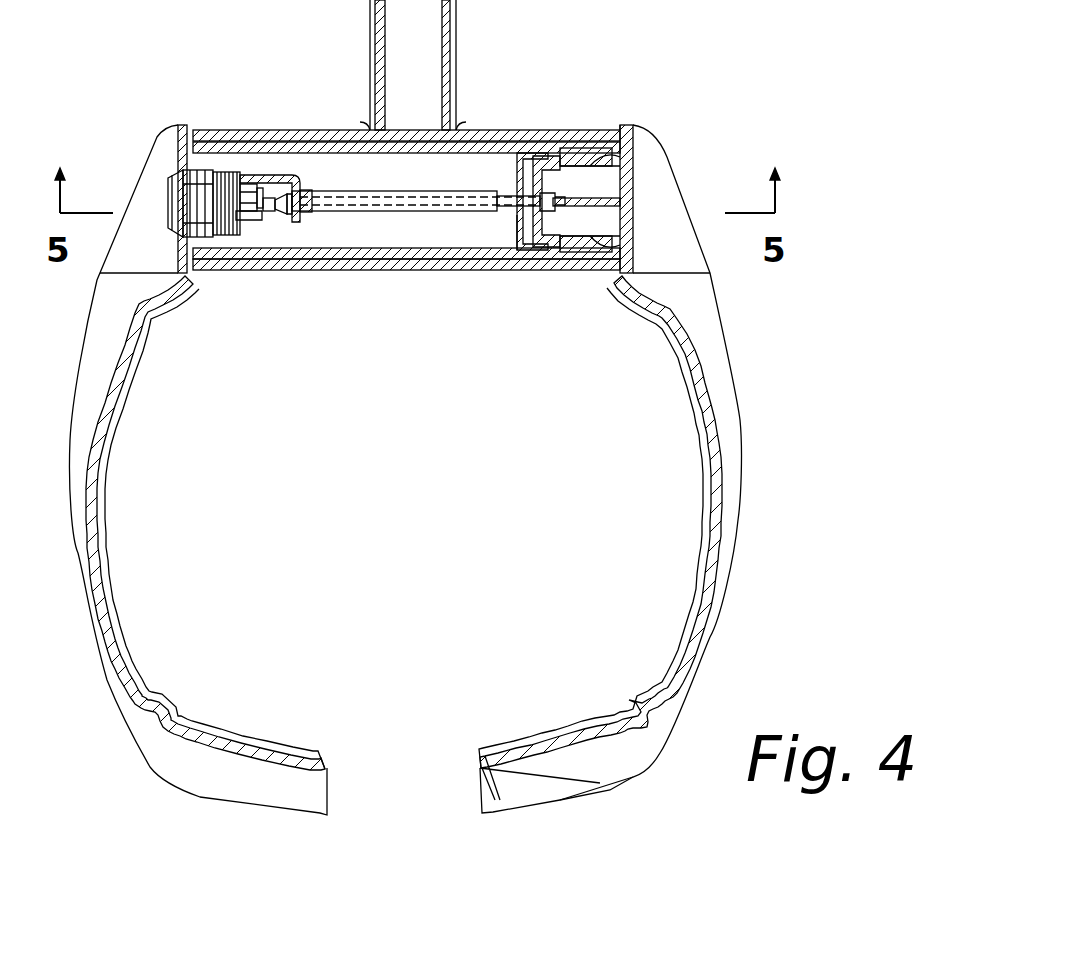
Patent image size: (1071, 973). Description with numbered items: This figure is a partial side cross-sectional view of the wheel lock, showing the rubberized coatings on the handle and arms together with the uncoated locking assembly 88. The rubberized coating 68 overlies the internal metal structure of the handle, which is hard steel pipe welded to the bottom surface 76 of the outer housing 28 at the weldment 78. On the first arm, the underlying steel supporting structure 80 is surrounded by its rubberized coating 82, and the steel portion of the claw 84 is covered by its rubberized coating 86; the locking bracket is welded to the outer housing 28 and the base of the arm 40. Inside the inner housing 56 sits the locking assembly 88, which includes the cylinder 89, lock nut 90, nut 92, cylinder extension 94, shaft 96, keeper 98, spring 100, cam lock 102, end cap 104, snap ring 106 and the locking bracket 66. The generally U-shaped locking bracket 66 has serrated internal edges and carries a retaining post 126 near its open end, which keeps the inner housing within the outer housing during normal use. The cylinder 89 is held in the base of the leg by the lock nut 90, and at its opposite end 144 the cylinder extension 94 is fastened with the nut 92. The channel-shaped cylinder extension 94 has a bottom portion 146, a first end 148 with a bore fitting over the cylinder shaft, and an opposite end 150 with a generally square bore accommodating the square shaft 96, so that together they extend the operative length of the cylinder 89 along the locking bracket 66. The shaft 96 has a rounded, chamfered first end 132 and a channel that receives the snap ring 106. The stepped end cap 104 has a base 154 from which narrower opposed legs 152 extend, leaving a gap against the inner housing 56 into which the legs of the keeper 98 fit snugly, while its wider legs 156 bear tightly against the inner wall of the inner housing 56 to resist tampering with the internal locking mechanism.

The outer housing 28 is at (601, 110).
The arm 40 is at (752, 428).
The inner housing 56 is at (288, 216).
The locking bracket 66 is at (468, 195).
The rubberized coating 68 is at (455, 4).
The bottom surface 76 is at (327, 140).
The weldment 78 is at (370, 128).
The steel supporting structure 80 is at (692, 370).
The rubberized coating 82 is at (720, 388).
The steel portion of the claw 84 is at (513, 770).
The rubberized coating 86 is at (619, 783).
The locking assembly 88 is at (426, 242).
The cylinder 89 is at (197, 236).
The lock nut 90 is at (203, 188).
The nut 92 is at (243, 195).
The cylinder extension 94 is at (300, 170).
The shaft 96 is at (372, 215).
The keeper 98 is at (526, 262).
The spring 100 is at (528, 160).
The cam lock 102 is at (518, 230).
The end cap 104 is at (600, 145).
The snap ring 106 is at (560, 198).
The retaining post 126 is at (272, 214).
The rounded first end 132 is at (282, 214).
The opposite end of the cylinder 144 is at (236, 220).
The bottom portion of the cylinder extension 146 is at (260, 186).
The first end of the extension 148 is at (252, 216).
The opposite end of the cylinder extension 150 is at (306, 214).
The opposed legs of the end cap 152 is at (564, 160).
The base of the end cap 154 is at (565, 226).
The wider legs of the end cap 156 is at (600, 166).